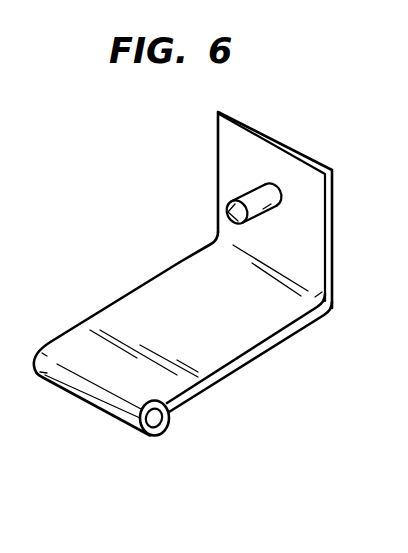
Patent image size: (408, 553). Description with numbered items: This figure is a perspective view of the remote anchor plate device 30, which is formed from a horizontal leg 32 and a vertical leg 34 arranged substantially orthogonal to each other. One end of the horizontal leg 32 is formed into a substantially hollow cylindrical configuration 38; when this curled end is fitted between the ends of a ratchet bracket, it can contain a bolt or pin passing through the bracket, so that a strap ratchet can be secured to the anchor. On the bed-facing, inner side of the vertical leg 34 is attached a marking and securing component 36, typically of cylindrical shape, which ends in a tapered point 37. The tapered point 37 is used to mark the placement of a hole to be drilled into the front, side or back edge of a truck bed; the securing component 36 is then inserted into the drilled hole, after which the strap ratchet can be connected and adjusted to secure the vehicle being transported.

The remote anchor plate device 30 is at (183, 348).
The horizontal leg 32 is at (158, 275).
The vertical leg 34 is at (218, 170).
The marking and securing component 36 is at (229, 285).
The tapered point 37 is at (228, 215).
The hollow cylindrical configuration 38 is at (93, 407).